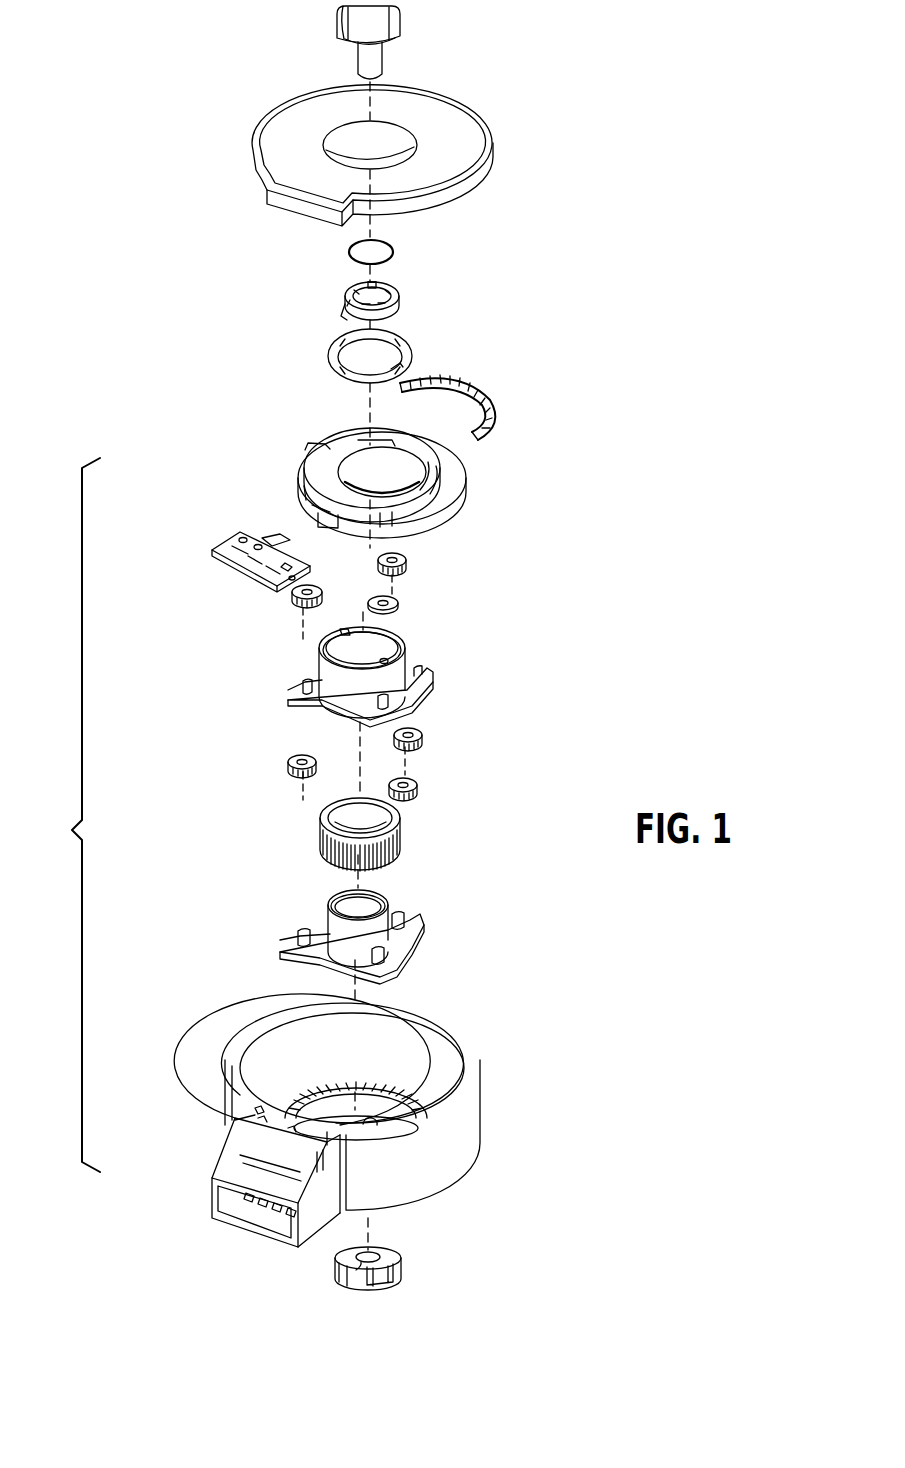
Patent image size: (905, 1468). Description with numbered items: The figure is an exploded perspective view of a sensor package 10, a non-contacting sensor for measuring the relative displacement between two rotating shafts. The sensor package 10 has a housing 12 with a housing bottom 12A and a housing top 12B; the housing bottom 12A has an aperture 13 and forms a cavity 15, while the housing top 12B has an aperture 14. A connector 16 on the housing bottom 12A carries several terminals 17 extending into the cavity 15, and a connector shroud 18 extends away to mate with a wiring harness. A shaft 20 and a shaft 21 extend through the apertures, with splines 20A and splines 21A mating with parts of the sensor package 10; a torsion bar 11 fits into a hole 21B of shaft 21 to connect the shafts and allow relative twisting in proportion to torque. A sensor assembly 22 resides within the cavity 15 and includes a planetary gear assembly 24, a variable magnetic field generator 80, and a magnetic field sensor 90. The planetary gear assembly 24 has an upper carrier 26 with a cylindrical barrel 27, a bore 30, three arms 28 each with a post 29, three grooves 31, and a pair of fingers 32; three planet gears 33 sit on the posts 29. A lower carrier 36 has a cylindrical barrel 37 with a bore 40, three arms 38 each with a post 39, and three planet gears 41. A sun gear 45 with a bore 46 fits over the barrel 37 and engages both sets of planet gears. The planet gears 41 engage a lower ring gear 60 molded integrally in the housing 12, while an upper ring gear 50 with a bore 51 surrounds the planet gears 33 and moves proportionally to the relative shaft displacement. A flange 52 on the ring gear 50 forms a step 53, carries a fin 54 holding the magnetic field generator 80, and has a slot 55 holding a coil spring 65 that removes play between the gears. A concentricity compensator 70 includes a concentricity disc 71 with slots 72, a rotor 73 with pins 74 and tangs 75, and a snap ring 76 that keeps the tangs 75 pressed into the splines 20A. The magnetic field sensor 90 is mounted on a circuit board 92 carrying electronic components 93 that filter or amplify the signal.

The sensor package 10 is at (197, 230).
The torsion bar 11 is at (357, 57).
The housing 12 is at (432, 1200).
The housing bottom 12A is at (460, 1140).
The housing top 12B is at (308, 116).
The aperture 13 is at (377, 1125).
The aperture 14 is at (402, 145).
The cavity 15 is at (428, 1055).
The connector 16 is at (208, 1200).
The terminals 17 is at (260, 1116).
The connector shroud 18 is at (238, 1168).
The shaft 20 is at (400, 22).
The splines 20A is at (393, 42).
The shaft 21 is at (405, 1272).
The splines 21A is at (385, 1282).
The hole 21B is at (340, 1263).
The sensor assembly 22 is at (230, 408).
The planetary gear assembly 24 is at (64, 815).
The upper carrier 26 is at (316, 665).
The cylindrical barrel 27 is at (406, 642).
The arms 28 is at (405, 718).
The post 29 is at (412, 692).
The bore 30 is at (300, 605).
The grooves 31 is at (336, 692).
The fingers 32 is at (390, 663).
The planet gears 33 is at (399, 603).
The lower carrier 36 is at (324, 906).
The cylindrical barrel 37 is at (398, 936).
The arms 38 is at (390, 976).
The post 39 is at (398, 956).
The bore 40 is at (378, 896).
The planet gears 41 is at (290, 766).
The sun gear 45 is at (330, 826).
The bore 46 is at (392, 830).
The upper ring gear 50 is at (450, 508).
The bore 51 is at (371, 480).
The flange 52 is at (410, 505).
The step 53 is at (452, 488).
The fin 54 is at (308, 457).
The slot 55 is at (440, 466).
The lower ring gear 60 is at (298, 1088).
The coil spring 65 is at (486, 393).
The concentricity compensator 70 is at (210, 318).
The concentricity disc 71 is at (330, 355).
The slots 72 is at (410, 355).
The rotor 73 is at (399, 300).
The pins 74 is at (343, 322).
The tangs 75 is at (352, 288).
The snap ring 76 is at (394, 248).
The variable magnetic field generator 80 is at (298, 510).
The magnetic field sensor 90 is at (264, 540).
The circuit board 92 is at (213, 552).
The electronic components 93 is at (245, 534).